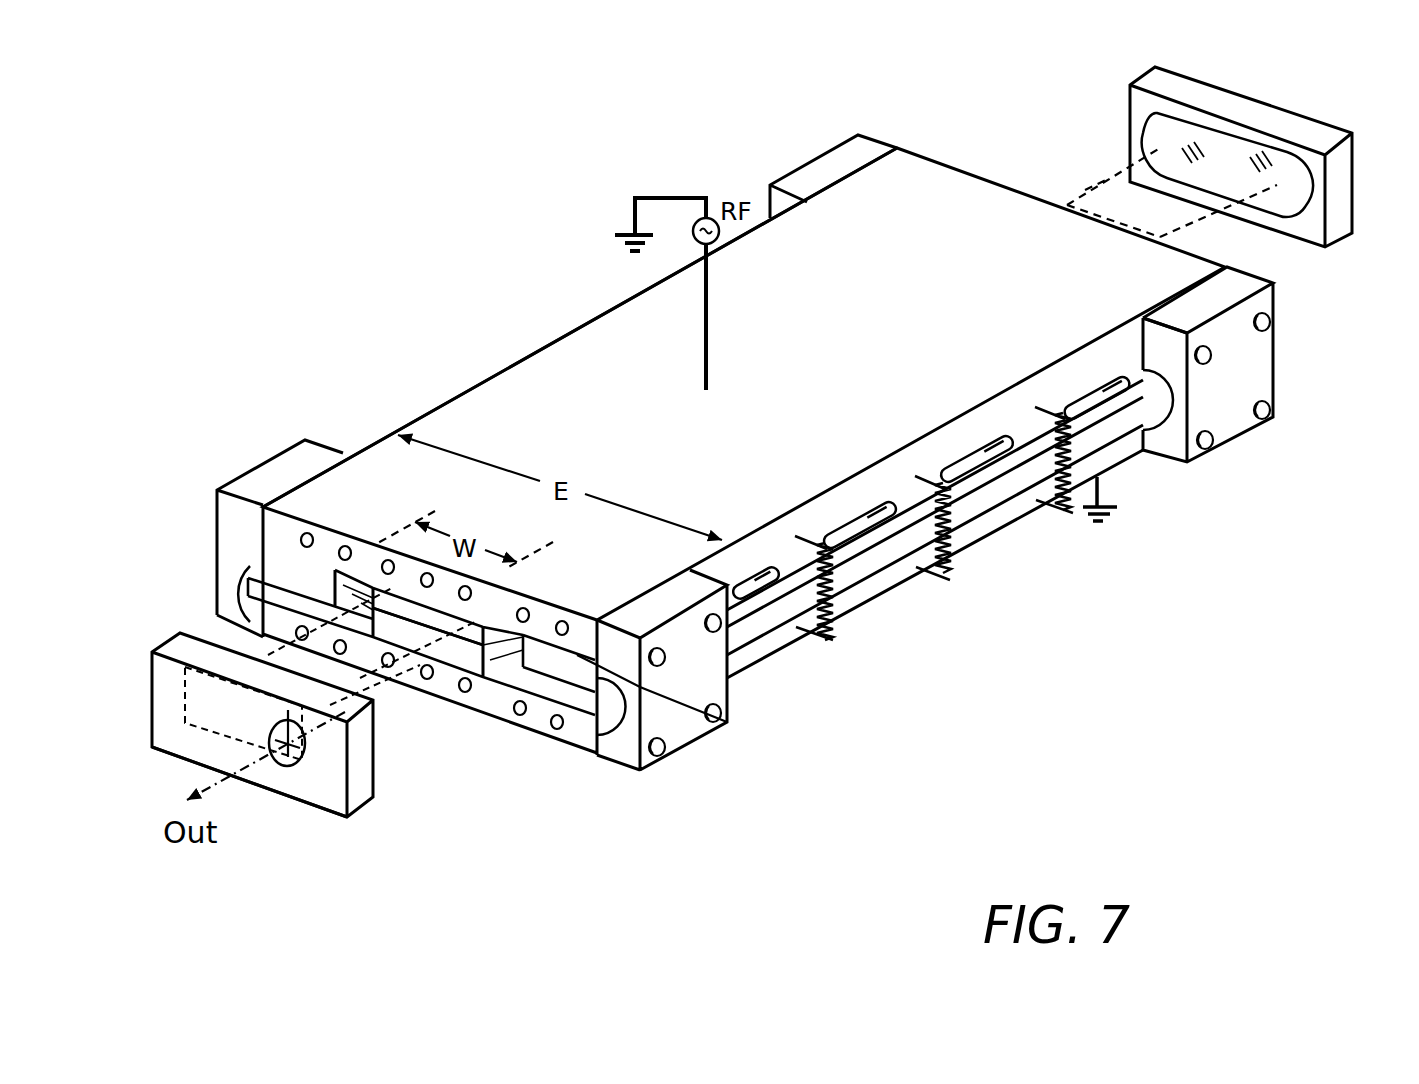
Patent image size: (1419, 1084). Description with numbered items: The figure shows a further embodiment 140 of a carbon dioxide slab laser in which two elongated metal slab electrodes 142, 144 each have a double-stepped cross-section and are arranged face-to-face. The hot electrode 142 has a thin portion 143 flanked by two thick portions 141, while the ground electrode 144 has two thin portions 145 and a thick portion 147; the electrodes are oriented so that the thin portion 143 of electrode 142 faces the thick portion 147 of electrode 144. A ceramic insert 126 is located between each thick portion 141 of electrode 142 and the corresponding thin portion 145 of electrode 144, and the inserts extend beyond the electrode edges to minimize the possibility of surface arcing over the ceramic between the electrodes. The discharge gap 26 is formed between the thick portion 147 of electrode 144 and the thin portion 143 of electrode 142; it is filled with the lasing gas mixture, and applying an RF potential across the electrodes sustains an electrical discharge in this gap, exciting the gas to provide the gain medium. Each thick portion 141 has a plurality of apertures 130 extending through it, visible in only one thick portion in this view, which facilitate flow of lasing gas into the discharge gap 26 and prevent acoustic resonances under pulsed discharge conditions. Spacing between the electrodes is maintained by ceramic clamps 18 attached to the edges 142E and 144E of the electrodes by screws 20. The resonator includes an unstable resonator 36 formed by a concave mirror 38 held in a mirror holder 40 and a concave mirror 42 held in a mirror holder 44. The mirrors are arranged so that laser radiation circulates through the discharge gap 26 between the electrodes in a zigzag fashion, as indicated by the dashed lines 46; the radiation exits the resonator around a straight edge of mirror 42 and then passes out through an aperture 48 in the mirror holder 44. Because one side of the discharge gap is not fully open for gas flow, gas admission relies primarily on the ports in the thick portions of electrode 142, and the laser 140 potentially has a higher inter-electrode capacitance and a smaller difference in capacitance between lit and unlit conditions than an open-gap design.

The ceramic clamps 18 is at (848, 150).
The screws 20 is at (660, 748).
The discharge gap 26 is at (413, 613).
The unstable resonator 36 is at (1155, 222).
The concave mirror 38 is at (1300, 197).
The mirror holder 40 is at (1310, 237).
The concave mirror 42 is at (153, 672).
The mirror holder 44 is at (180, 747).
The dashed lines 46 is at (1090, 185).
The aperture 48 is at (290, 767).
The ceramic insert 126 is at (275, 570).
The apertures 130 is at (987, 460).
The slab laser embodiment 140 is at (1072, 635).
The thick portions 141 is at (303, 590).
The slab electrode 142 is at (520, 373).
The electrode edge 142E is at (745, 540).
The thin portion 143 is at (363, 557).
The slab electrode 144 is at (487, 725).
The electrode edge 144E is at (860, 603).
The thin portions 145 is at (268, 614).
The thick portion 147 is at (445, 660).